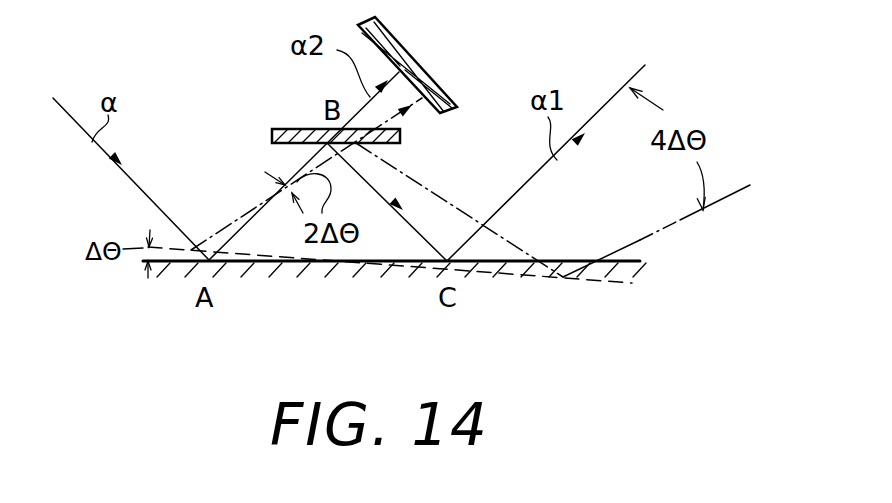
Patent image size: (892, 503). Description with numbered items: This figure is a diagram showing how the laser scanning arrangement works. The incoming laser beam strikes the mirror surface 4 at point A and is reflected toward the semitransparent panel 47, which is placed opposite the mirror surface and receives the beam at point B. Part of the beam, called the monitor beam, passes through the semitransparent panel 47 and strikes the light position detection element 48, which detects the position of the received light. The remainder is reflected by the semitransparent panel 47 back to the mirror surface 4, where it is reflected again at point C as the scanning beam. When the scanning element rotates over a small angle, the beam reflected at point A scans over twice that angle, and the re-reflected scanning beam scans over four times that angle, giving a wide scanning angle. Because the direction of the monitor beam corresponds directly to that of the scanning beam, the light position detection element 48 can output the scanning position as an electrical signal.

The mirror surface 4 is at (282, 263).
The semitransparent panel 47 is at (287, 128).
The light position detection element 48 is at (438, 82).